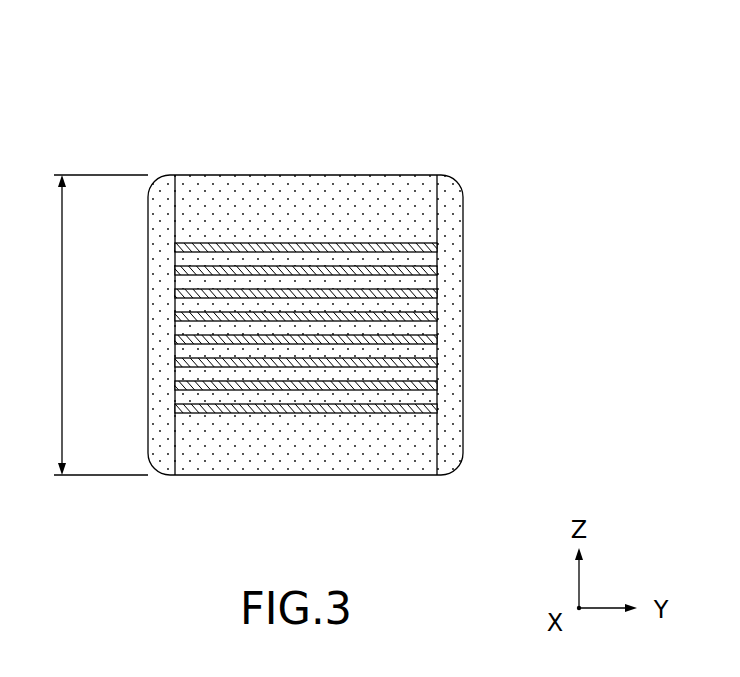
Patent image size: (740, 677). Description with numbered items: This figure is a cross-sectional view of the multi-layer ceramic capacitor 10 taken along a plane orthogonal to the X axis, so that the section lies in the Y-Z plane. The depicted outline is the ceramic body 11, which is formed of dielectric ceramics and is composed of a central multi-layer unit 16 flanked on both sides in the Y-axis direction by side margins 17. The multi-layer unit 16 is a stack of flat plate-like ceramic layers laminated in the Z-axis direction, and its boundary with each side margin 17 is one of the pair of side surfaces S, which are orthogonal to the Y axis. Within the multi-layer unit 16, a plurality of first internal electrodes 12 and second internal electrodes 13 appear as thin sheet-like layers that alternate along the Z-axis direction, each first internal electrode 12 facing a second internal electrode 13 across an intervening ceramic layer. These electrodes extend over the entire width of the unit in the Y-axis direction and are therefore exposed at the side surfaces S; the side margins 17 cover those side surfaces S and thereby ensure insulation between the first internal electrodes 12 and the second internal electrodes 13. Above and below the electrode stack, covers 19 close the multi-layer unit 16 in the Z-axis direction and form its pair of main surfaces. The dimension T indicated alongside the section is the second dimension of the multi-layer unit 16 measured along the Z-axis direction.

The multi-layer ceramic capacitor 10 is at (112, 73).
The ceramic body 11 is at (442, 141).
The first internal electrodes 12 is at (264, 248).
The second internal electrodes 13 is at (389, 270).
The multi-layer unit 16 is at (312, 152).
The side margins 17 is at (172, 311).
The covers 19 is at (318, 226).
The side surfaces S is at (172, 361).
The second dimension T is at (92, 325).